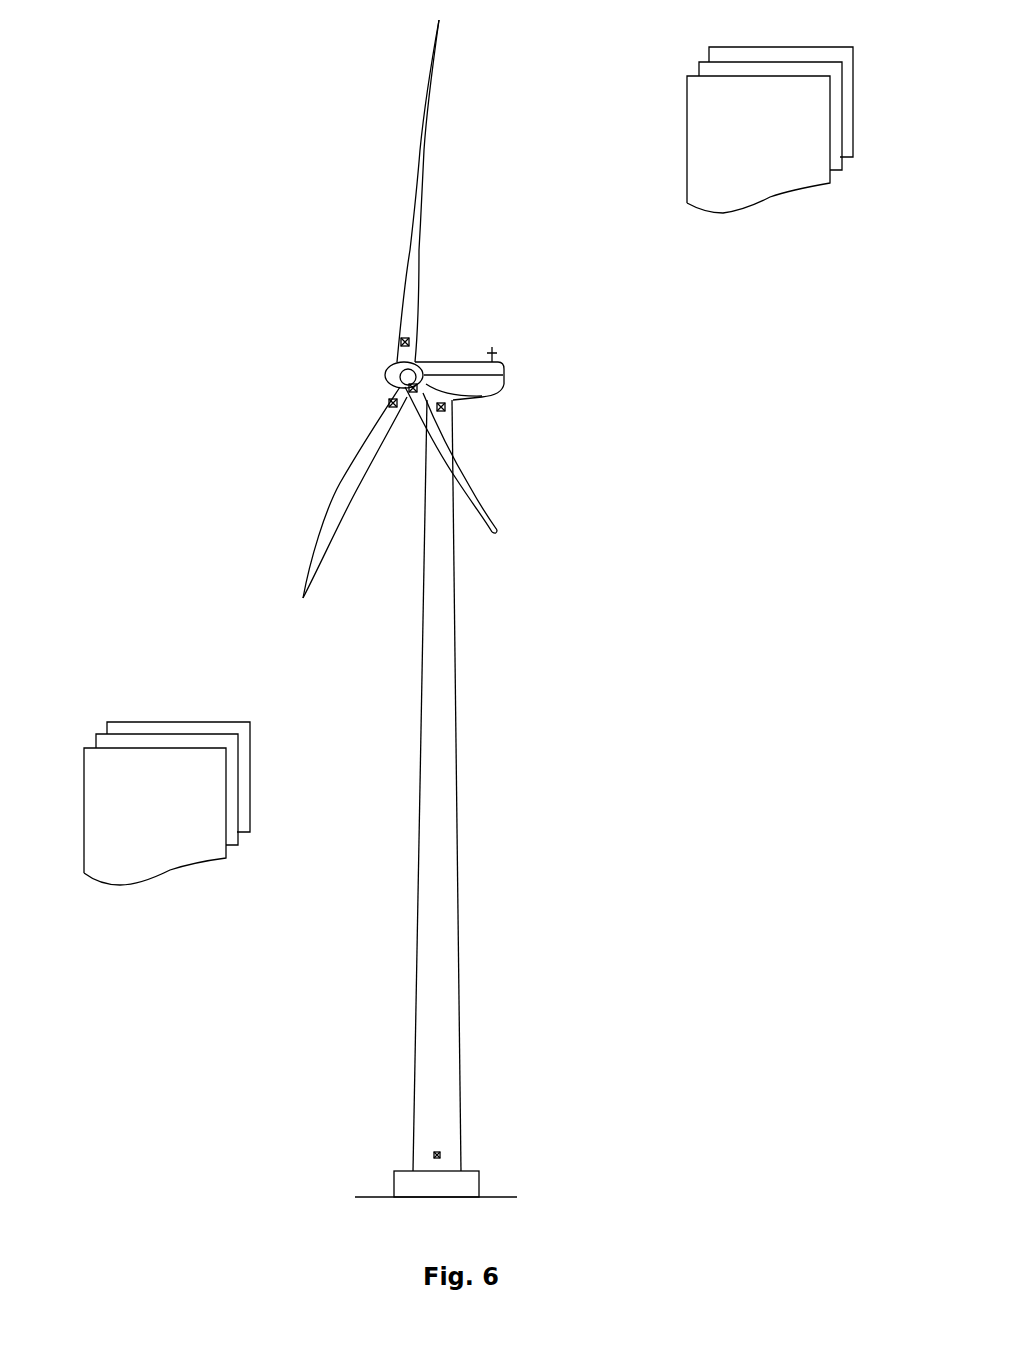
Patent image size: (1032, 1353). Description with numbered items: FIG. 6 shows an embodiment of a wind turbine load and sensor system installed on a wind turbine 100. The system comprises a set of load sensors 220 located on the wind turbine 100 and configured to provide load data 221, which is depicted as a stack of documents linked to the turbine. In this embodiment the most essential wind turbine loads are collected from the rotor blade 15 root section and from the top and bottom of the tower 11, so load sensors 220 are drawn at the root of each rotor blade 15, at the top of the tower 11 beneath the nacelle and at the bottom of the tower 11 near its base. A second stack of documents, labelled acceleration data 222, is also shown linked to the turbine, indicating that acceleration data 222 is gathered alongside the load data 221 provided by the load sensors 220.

The wind turbine 100 is at (582, 608).
The tower 11 is at (432, 912).
The rotor blade 15 is at (413, 248).
The load sensor 220 is at (409, 338).
The load data 221 is at (766, 173).
The acceleration data 222 is at (168, 845).